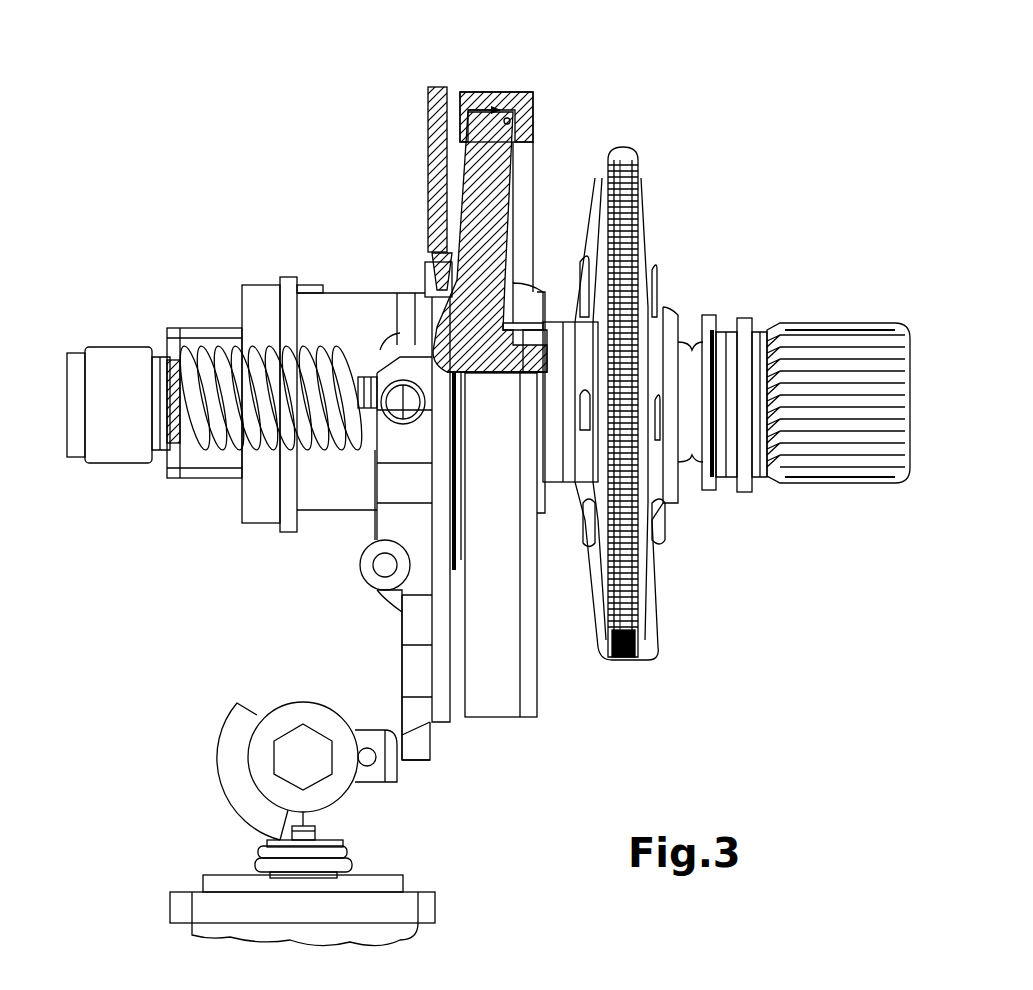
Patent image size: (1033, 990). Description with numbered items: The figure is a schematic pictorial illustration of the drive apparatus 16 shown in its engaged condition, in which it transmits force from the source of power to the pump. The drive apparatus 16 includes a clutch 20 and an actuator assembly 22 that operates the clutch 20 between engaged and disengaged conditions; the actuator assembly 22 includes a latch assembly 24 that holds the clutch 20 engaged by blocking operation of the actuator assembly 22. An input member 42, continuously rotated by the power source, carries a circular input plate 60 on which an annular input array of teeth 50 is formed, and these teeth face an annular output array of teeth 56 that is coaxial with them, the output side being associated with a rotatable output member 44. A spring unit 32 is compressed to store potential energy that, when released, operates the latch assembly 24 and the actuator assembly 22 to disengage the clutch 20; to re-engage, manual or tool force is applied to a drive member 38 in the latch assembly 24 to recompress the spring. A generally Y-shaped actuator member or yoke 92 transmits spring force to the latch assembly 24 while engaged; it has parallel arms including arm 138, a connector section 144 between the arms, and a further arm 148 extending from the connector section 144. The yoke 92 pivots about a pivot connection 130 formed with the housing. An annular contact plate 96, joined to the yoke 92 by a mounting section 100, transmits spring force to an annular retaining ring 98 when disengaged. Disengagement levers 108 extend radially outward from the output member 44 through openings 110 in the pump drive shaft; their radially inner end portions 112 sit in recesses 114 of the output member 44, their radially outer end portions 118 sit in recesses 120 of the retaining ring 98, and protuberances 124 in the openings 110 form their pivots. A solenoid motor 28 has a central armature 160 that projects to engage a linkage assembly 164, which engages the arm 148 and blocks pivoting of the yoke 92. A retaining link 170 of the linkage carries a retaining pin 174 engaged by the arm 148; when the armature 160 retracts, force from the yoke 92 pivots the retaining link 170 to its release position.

The drive apparatus 16 is at (292, 112).
The clutch 20 is at (640, 132).
The actuator assembly 22 is at (382, 138).
The latch assembly 24 is at (192, 720).
The motor 28 is at (210, 932).
The spring unit 32 is at (262, 345).
The drive member 38 is at (288, 712).
The input member 42 is at (826, 352).
The output member 44 is at (205, 465).
The annular input array of teeth 50 is at (633, 165).
The annular output array of teeth 56 is at (590, 175).
The input plate 60 is at (642, 190).
The yoke 92 is at (380, 602).
The annular contact plate 96 is at (437, 88).
The annular retaining ring 98 is at (500, 105).
The mounting section 100 is at (390, 300).
The disengagement lever 108 is at (478, 178).
The opening 110 is at (520, 282).
The radially inner end portion 112 is at (483, 352).
The recess 114 is at (520, 398).
The radially outer end portion 118 is at (476, 108).
The recess 120 is at (535, 112).
The protuberance 124 is at (548, 300).
The pivot connection 130 is at (390, 566).
The arm 138 is at (395, 438).
The connector section 144 is at (412, 615).
The arm 148 is at (415, 740).
The central armature 160 is at (316, 833).
The linkage assembly 164 is at (218, 790).
The retaining link 170 is at (262, 810).
The retaining pin 174 is at (367, 764).